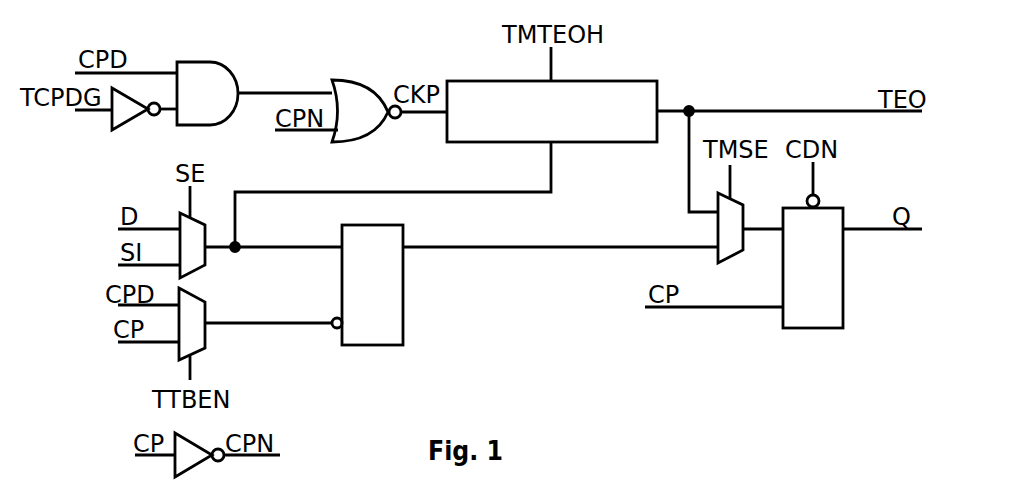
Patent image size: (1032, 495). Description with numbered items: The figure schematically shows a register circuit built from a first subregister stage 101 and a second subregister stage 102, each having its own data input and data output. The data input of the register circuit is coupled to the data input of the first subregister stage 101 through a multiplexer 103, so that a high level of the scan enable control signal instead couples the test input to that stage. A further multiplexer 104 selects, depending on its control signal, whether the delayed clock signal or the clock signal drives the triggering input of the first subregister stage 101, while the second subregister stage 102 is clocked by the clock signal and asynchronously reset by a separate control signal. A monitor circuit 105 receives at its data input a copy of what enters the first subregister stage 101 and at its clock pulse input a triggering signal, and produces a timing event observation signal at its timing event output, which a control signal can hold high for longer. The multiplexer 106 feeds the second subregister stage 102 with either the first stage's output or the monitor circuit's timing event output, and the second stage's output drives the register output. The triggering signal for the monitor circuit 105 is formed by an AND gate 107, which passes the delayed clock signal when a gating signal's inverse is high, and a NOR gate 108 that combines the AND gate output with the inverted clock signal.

The first subregister stage 101 is at (403, 302).
The second subregister stage 102 is at (843, 313).
The multiplexer 103 is at (205, 257).
The second multiplexer (clock select) 104 is at (205, 337).
The monitor circuit 105 is at (657, 82).
The multiplexer 106 is at (718, 228).
The AND gate 107 is at (238, 78).
The NOR gate 108 is at (368, 82).